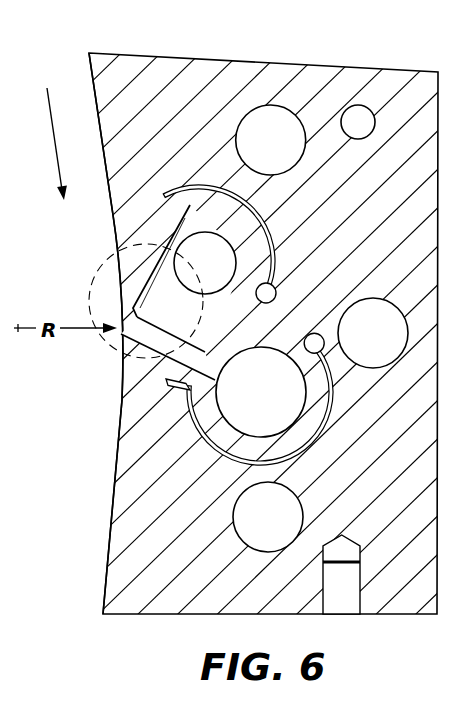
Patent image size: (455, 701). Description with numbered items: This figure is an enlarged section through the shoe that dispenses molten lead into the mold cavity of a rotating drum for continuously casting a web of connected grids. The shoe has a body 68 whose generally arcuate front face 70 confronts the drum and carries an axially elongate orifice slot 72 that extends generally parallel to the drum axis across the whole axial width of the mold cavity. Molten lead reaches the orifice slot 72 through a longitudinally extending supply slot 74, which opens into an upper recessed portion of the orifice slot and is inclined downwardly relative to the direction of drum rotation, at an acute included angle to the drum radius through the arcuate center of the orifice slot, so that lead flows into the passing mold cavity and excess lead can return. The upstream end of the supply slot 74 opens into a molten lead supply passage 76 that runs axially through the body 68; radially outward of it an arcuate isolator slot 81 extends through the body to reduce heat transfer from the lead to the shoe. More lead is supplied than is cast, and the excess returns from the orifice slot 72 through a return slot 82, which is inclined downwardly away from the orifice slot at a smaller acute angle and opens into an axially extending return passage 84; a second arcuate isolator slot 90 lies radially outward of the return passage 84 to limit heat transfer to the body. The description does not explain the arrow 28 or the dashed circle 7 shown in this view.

The shoe body 68 is at (258, 50).
The arcuate front face 70 is at (103, 148).
The direction arrow 28 is at (54, 136).
The supply slot 74 is at (138, 290).
The orifice slot 72 is at (108, 343).
The molten lead supply passage 76 is at (203, 252).
The recess circle 7 is at (108, 258).
The arcuate isolator slot 81 is at (270, 236).
The return passage 84 is at (276, 405).
The arcuate isolator slot 90 is at (201, 443).
The return slot 82 is at (167, 384).